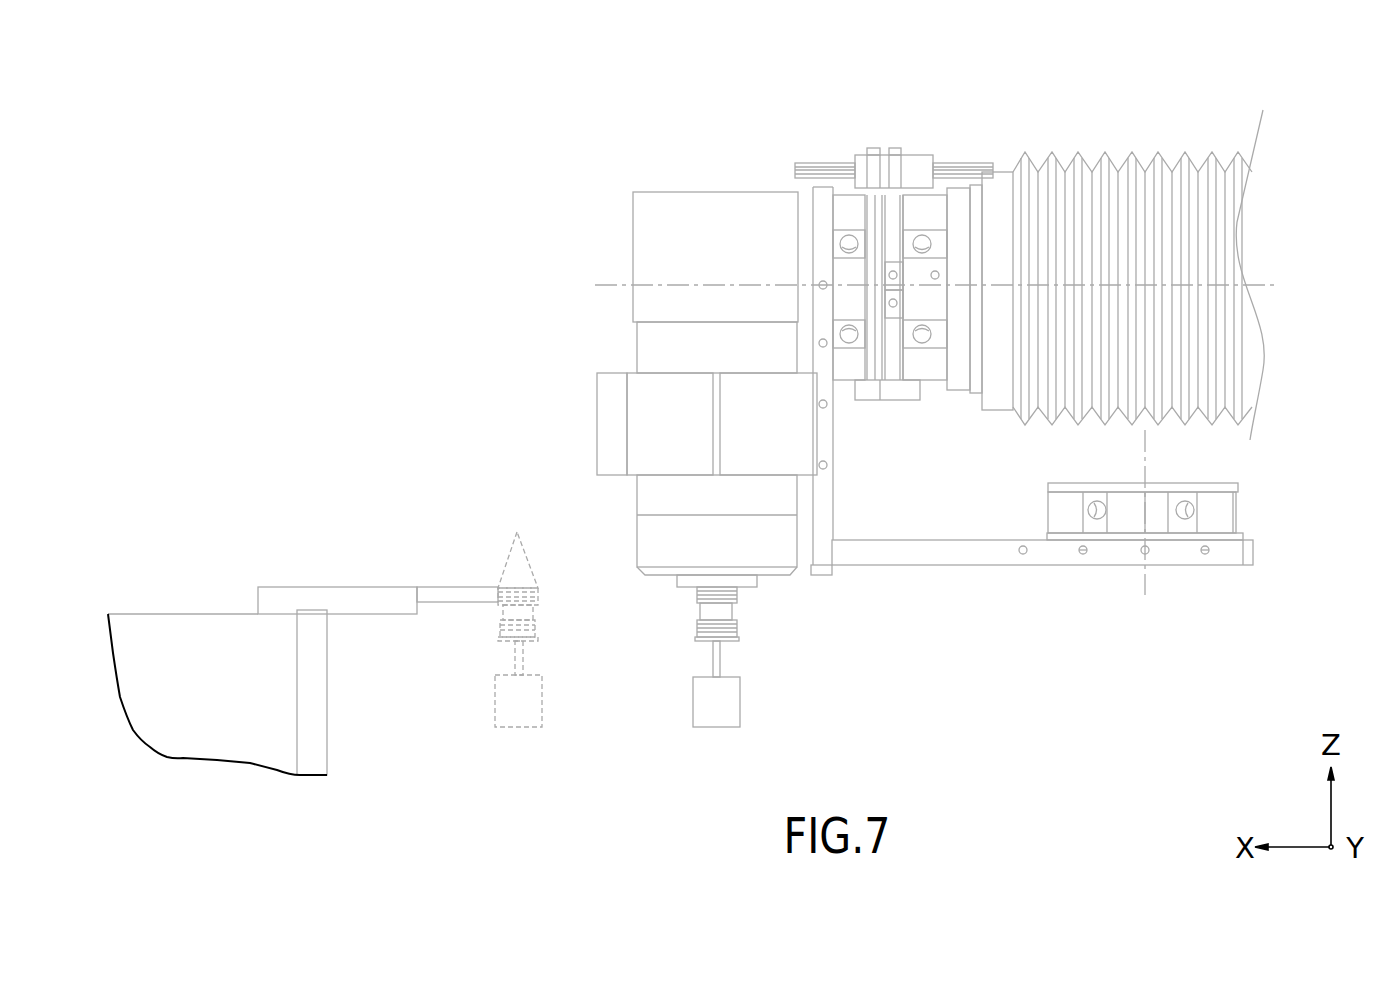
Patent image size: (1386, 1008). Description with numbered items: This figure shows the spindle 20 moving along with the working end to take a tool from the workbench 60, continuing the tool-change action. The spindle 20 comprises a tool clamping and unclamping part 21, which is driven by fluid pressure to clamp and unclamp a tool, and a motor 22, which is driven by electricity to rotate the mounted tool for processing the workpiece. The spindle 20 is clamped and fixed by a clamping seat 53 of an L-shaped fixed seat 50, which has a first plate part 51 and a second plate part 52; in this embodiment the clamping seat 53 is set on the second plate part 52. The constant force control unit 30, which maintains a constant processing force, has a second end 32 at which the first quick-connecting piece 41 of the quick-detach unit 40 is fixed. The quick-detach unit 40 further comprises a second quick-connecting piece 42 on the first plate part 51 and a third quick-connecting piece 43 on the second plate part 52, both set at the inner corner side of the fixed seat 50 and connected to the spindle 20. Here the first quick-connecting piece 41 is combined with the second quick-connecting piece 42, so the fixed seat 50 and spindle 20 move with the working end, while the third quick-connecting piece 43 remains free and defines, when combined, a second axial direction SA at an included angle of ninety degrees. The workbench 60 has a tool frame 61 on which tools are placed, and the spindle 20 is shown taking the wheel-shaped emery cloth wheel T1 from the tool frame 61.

The spindle 20 is at (608, 223).
The tool clamping and unclamping part 21 is at (648, 307).
The motor 22 is at (652, 354).
The clamping seat 53 is at (605, 440).
The first plate part 51 is at (820, 243).
The second plate part 52 is at (958, 553).
The fixed seat 50 is at (836, 591).
The second quick-connecting piece 42 is at (848, 240).
The first quick-connecting piece 41 is at (928, 215).
The quick-detach unit 40 is at (1189, 500).
The third quick-connecting piece 43 is at (1225, 512).
The second end 32 is at (993, 262).
The constant force control unit 30 is at (1127, 128).
The workbench 60 is at (172, 623).
The tool frame 61 is at (350, 597).
The wheel-shaped emery cloth wheel T1 is at (705, 712).
The second axial direction SA is at (1145, 593).